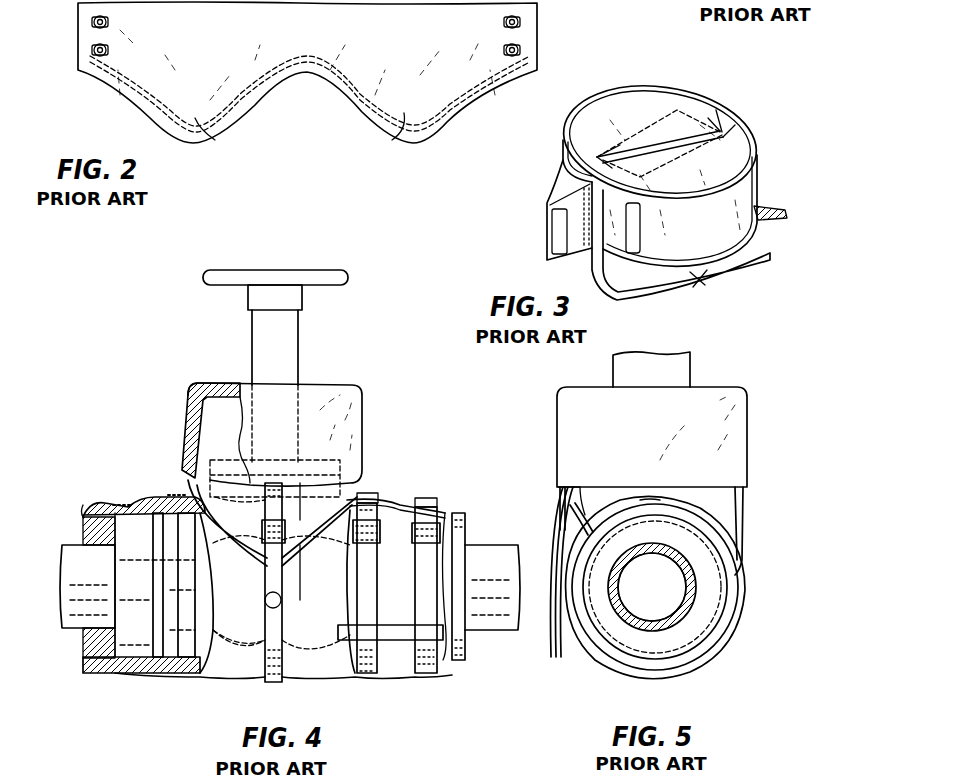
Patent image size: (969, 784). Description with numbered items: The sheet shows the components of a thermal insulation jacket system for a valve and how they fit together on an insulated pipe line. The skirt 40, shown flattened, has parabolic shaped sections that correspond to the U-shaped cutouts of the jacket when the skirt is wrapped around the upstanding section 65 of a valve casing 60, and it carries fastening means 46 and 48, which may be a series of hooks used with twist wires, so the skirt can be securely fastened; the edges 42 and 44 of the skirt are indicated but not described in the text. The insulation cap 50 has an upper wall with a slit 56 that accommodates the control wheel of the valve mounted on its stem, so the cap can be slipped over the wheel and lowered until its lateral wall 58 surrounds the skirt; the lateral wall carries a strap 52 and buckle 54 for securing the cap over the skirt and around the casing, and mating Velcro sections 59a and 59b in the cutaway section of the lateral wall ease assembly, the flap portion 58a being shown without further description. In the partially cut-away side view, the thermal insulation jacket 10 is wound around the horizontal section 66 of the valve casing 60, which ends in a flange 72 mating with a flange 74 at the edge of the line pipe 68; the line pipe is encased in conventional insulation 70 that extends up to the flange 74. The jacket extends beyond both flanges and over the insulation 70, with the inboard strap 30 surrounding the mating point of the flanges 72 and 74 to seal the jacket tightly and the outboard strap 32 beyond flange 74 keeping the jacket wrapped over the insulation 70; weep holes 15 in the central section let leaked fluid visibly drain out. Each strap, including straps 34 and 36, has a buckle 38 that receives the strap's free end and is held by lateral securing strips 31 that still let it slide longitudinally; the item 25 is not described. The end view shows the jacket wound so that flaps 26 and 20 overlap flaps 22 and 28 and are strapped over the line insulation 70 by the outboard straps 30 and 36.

In FIG. 4, the thermal insulation jacket 10 is at (460, 676).
In FIG. 4, the weep holes 15 is at (264, 603).
In FIG. 4, the end flap section 20 is at (97, 500).
In FIG. 4, the end flap section 22 is at (83, 510).
In FIG. 4, the flange 25 is at (455, 513).
In FIG. 5, the end flap section 26 is at (635, 500).
In FIG. 4, the end flap section 28 is at (445, 535).
In FIG. 5, the end flap section 28 is at (657, 508).
In FIG. 4, the outboard strap 30 is at (430, 505).
In FIG. 4, the lateral securing strips 31 is at (385, 495).
In FIG. 4, the inboard strap 32 is at (362, 493).
In FIG. 4, the outboard strap 34 is at (118, 503).
In FIG. 4, the inboard strap 36 is at (178, 495).
In FIG. 4, the buckle 38 is at (425, 543).
In FIG. 5, the buckle 38 is at (575, 515).
In FIG. 2, the skirt 40 is at (322, 105).
In FIG. 4, the skirt 40 is at (232, 400).
In FIG. 5, the skirt 40 is at (578, 485).
In FIG. 2, the left cutout 42 is at (210, 128).
In FIG. 2, the right cutout 44 is at (405, 118).
In FIG. 2, the fastening means 46 is at (108, 22).
In FIG. 2, the fastening means 48 is at (520, 22).
In FIG. 3, the insulation cap 50 is at (702, 86).
In FIG. 4, the insulation cap 50 is at (365, 395).
In FIG. 5, the insulation cap 50 is at (748, 452).
In FIG. 3, the strap 52 is at (700, 270).
In FIG. 4, the strap 52 is at (280, 578).
In FIG. 5, the strap 52 is at (745, 492).
In FIG. 3, the buckle 54 is at (768, 206).
In FIG. 4, the buckle 54 is at (265, 560).
In FIG. 5, the buckle 54 is at (554, 537).
In FIG. 3, the slit 56 is at (668, 130).
In FIG. 3, the lateral wall 58 is at (722, 228).
In FIG. 4, the lateral wall 58 is at (190, 440).
In FIG. 5, the lateral wall 58 is at (558, 418).
In FIG. 3, the side wall flap 58a is at (570, 205).
In FIG. 3, the mating Velcro section 59a is at (552, 243).
In FIG. 3, the mating Velcro section 59b is at (640, 228).
In FIG. 4, the valve casing 60 is at (232, 500).
In FIG. 4, the upstanding section 65 is at (292, 376).
In FIG. 5, the upstanding section 65 is at (686, 370).
In FIG. 4, the horizontal section 66 is at (205, 630).
In FIG. 4, the line pipe 68 is at (75, 545).
In FIG. 5, the line pipe 68 is at (685, 592).
In FIG. 4, the insulation 70 is at (90, 645).
In FIG. 5, the insulation 70 is at (712, 586).
In FIG. 4, the flange 72 is at (190, 565).
In FIG. 4, the flange 74 is at (165, 532).